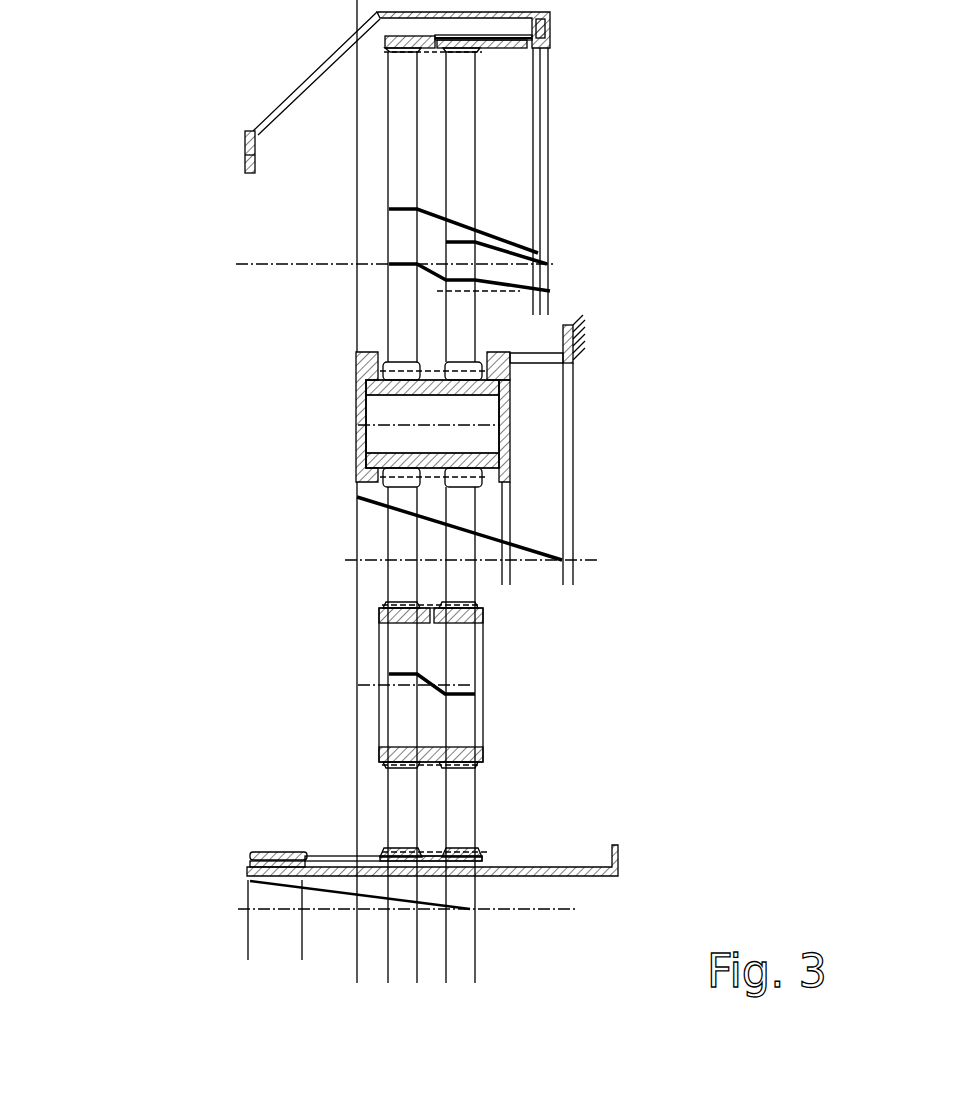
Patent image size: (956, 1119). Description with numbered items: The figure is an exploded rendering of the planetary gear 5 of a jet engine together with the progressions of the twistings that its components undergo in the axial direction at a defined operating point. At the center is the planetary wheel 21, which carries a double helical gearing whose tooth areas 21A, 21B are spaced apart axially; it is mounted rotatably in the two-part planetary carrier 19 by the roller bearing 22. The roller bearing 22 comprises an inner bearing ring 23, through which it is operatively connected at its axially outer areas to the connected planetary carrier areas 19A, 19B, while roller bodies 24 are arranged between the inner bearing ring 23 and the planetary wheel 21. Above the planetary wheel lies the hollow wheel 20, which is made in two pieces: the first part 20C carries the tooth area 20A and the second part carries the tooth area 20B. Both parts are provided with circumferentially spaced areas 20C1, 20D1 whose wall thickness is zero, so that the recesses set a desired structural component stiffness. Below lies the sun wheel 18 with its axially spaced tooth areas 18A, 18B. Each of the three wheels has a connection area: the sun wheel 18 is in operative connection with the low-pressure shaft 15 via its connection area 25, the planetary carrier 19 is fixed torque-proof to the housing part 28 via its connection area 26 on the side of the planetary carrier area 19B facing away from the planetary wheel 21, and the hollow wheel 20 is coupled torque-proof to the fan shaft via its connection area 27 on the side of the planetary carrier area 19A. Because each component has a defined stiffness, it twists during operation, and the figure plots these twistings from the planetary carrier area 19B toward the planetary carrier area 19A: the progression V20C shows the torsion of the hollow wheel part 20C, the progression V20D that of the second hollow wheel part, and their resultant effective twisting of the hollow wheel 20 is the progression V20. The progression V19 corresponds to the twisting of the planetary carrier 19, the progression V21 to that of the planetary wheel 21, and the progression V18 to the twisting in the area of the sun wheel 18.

The planetary gear 5 is at (170, 397).
The low-pressure shaft 15 is at (523, 867).
The sun wheel 18 is at (365, 797).
The tooth area of the sun wheel 18A is at (395, 848).
The tooth area of the sun wheel 18B is at (457, 850).
The planetary carrier 19 is at (333, 372).
The planetary carrier area 19A is at (360, 430).
The planetary carrier area 19B is at (506, 467).
The hollow wheel 20 is at (537, 60).
The tooth area of the hollow wheel 20A is at (403, 55).
The tooth area of the hollow wheel 20B is at (463, 58).
The first part of the hollow wheel 20C is at (549, 15).
The area of the hollow wheel part 20C1 is at (457, 35).
The area of the hollow wheel part 20D1 is at (547, 50).
The planetary wheel 21 is at (507, 618).
The tooth area of the planetary wheel 21A is at (392, 605).
The tooth area of the planetary wheel 21B is at (462, 607).
The roller bearing 22 is at (362, 345).
The inner bearing ring 23 is at (366, 396).
The roller bodies 24 is at (360, 350).
The connection area 25 is at (207, 865).
The connection area 26 is at (590, 368).
The connection area 27 is at (226, 154).
The housing part 28 is at (575, 355).
The progression V18 is at (400, 902).
The progression V19 is at (527, 542).
The progression V20 is at (513, 280).
The progression V20C is at (493, 233).
The progression V20D is at (540, 250).
The progression V21 is at (465, 688).